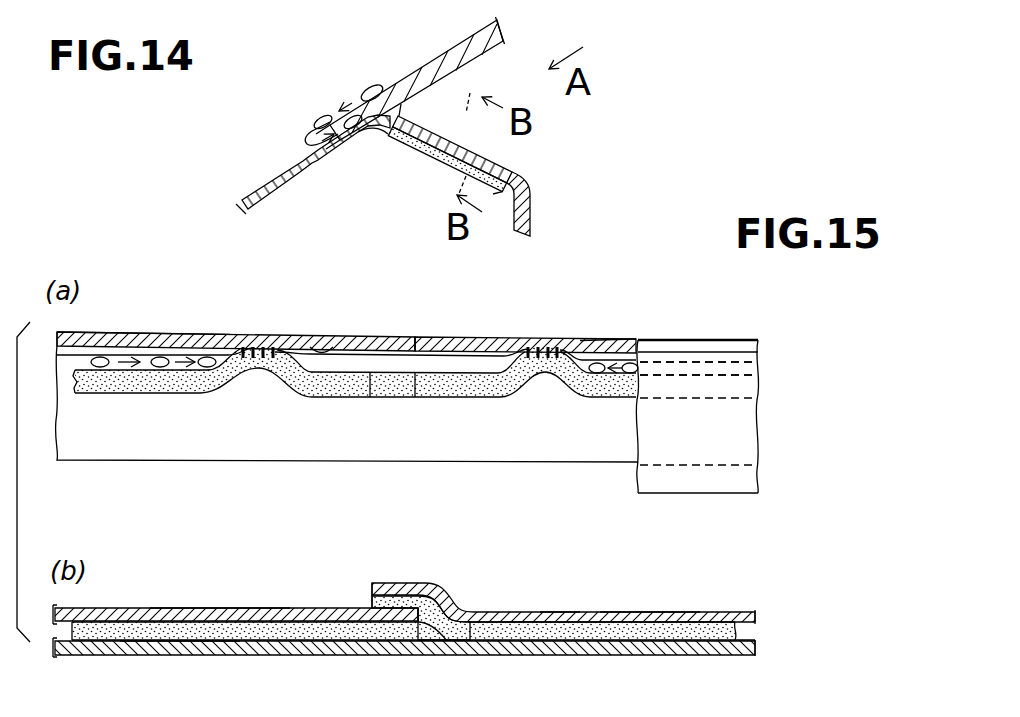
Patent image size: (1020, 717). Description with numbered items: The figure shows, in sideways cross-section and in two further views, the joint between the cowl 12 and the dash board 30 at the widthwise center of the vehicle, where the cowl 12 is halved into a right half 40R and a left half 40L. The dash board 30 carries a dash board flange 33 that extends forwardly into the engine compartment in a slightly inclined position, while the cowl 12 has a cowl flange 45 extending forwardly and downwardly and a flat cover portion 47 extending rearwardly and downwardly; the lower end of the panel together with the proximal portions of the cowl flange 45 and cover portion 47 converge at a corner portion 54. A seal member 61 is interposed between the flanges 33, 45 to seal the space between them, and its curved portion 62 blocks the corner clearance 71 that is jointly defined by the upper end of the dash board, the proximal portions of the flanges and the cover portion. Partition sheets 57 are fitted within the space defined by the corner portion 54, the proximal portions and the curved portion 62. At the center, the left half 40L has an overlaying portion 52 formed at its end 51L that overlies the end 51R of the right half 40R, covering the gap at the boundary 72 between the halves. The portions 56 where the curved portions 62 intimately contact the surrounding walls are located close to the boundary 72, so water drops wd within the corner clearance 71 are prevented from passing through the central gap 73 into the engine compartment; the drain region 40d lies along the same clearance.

In FIG. 14, the cowl 12 is at (507, 27).
In FIG. 15, the cowl 12 is at (728, 334).
In FIG. 14, the dash board 30 is at (260, 204).
In FIG. 15, the dash board 30 is at (123, 657).
In FIG. 14, the dash board flange 33 is at (530, 193).
In FIG. 15, the dash board flange 33 is at (140, 462).
In FIG. 14, the cowl flange 45 is at (490, 153).
In FIG. 15, the cowl flange 45 is at (748, 428).
In FIG. 14, the cover portion 47 is at (316, 122).
In FIG. 14, the corner portion 54 is at (384, 97).
In FIG. 15, the corner portion 54 is at (324, 348).
In FIG. 15, the intimate contact portions 56 is at (262, 342).
In FIG. 15, the partition sheets 57 is at (270, 372).
In FIG. 14, the seal member 61 is at (405, 138).
In FIG. 15, the seal member 61 is at (185, 395).
In FIG. 15, the curved portion 62 is at (255, 374).
In FIG. 14, the corner clearance 71 is at (360, 131).
In FIG. 15, the corner clearance 71 is at (580, 358).
In FIG. 15, the boundary 72 is at (418, 335).
In FIG. 15, the central gap 73 is at (432, 398).
In FIG. 14, the water drops wd is at (365, 90).
In FIG. 15, the water drops wd is at (205, 358).
In FIG. 15, the drain portion 40d is at (138, 331).
In FIG. 15, the left half 40L is at (595, 334).
In FIG. 15, the right half 40R is at (202, 606).
In FIG. 15, the end of right half 51R is at (390, 345).
In FIG. 15, the end of left half 51L is at (462, 345).
In FIG. 15, the overlaying portion 52 is at (408, 583).